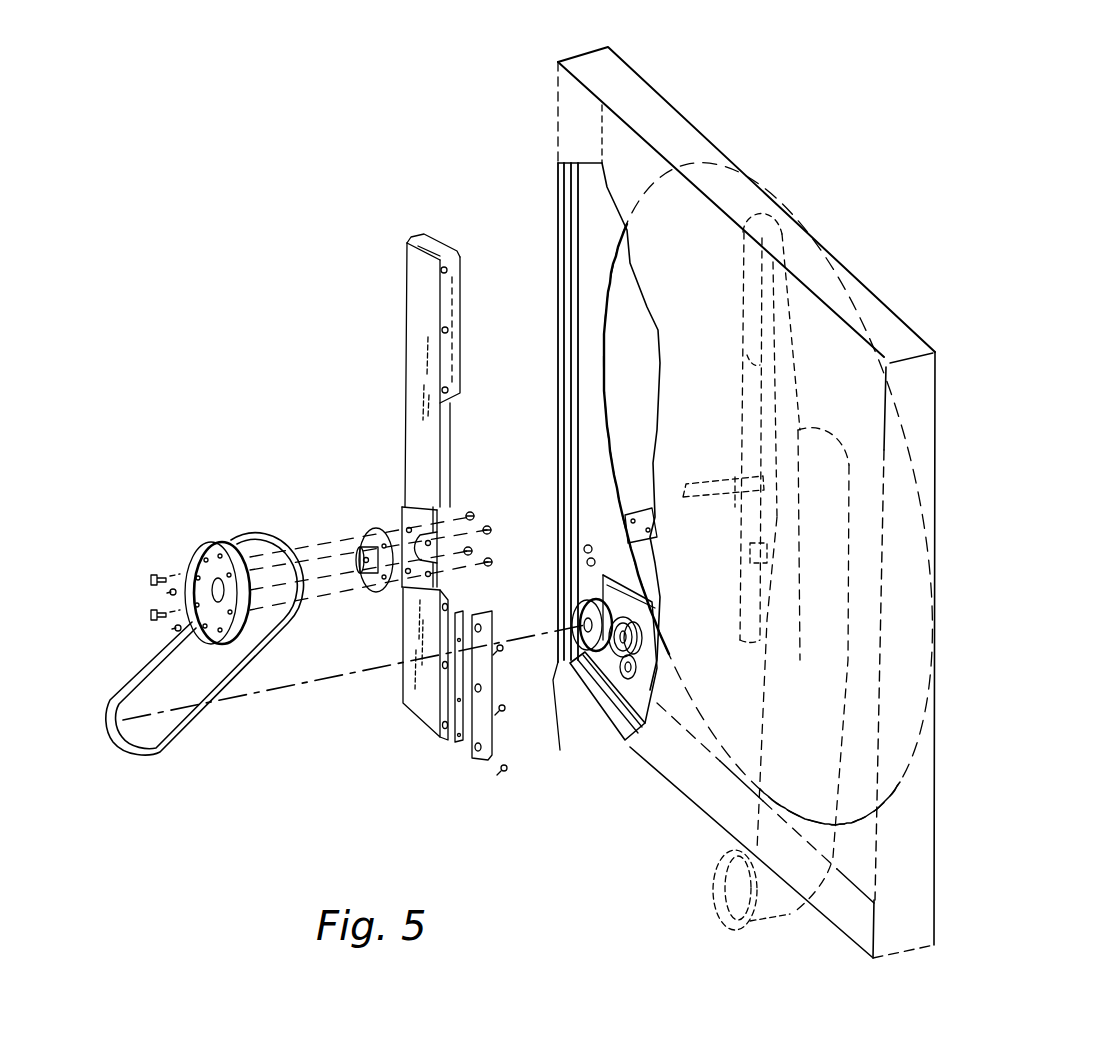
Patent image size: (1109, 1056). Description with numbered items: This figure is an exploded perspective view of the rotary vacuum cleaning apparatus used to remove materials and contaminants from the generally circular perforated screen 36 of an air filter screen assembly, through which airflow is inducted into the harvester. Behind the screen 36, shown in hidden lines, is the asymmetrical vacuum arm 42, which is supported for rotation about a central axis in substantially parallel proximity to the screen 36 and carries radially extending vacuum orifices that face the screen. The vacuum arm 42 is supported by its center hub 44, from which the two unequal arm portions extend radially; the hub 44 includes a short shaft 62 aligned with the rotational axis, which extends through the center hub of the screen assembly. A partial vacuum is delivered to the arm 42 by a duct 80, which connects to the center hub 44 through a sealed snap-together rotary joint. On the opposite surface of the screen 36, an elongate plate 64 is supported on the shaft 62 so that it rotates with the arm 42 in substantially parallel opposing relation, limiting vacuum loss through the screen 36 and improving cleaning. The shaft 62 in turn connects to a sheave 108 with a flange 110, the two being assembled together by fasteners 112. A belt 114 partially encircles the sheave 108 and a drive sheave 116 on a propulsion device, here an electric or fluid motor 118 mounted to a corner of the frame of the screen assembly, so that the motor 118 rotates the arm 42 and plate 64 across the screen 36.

The perforated screen 36 is at (847, 350).
The asymmetrical vacuum arm 42 is at (795, 302).
The center hub 44 is at (808, 510).
The short shaft 62 is at (704, 484).
The elongate plate 64 is at (408, 236).
The duct 80 is at (788, 913).
The sheave 108 is at (208, 540).
The flange 110 is at (367, 530).
The fasteners 112 is at (151, 580).
The belt 114 is at (207, 707).
The drive sheave 116 is at (563, 690).
The motor 118 is at (645, 652).